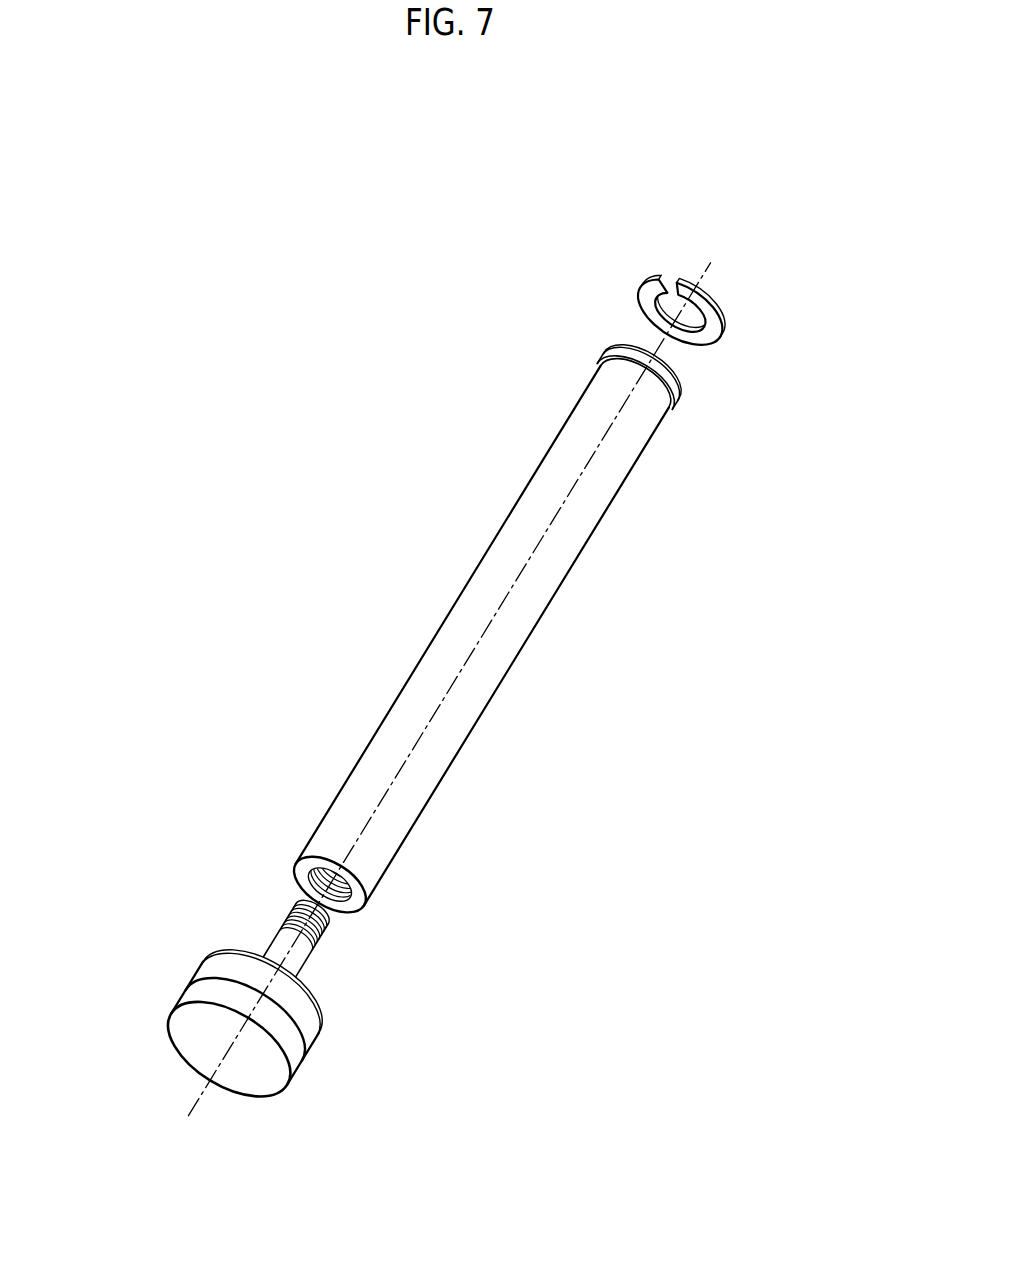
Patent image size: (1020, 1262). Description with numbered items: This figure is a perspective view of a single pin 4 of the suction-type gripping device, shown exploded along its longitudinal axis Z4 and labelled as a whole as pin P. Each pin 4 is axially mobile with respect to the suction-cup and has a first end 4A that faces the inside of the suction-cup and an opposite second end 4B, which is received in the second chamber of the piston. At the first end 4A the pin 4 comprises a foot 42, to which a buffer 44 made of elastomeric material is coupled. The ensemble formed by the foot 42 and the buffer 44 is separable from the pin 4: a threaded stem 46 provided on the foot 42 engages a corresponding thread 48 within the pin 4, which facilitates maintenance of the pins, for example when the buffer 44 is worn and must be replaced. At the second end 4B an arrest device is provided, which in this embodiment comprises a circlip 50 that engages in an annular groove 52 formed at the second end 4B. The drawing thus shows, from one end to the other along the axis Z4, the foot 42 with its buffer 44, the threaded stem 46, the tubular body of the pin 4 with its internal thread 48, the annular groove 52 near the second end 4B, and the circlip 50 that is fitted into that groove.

The pin P is at (145, 940).
The pin 4 is at (747, 310).
The first end 4A is at (390, 883).
The second end 4B is at (566, 271).
The foot 42 is at (211, 951).
The buffer 44 is at (190, 1029).
The threaded stem 46 is at (287, 921).
The thread 48 is at (329, 902).
The circlip 50 is at (713, 330).
The annular groove 52 is at (666, 397).
The axis Z4 is at (224, 1062).